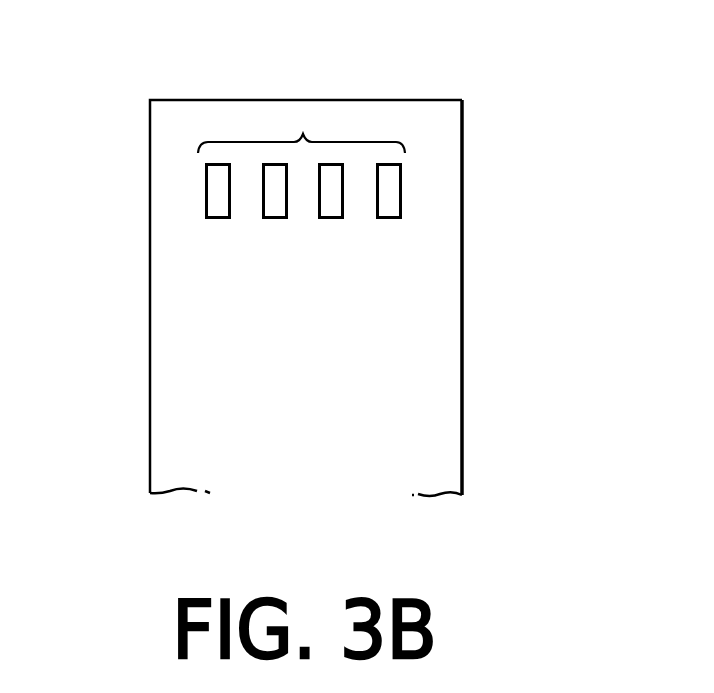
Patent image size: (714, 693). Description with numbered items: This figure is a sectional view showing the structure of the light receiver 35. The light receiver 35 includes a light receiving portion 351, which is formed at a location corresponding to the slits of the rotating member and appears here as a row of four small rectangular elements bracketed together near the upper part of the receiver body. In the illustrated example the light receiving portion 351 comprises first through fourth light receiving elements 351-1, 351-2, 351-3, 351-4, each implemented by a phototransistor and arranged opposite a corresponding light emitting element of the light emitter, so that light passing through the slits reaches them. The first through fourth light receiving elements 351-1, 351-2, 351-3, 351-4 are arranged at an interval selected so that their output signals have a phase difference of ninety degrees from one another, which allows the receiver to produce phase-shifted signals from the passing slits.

The light receiver 35 is at (463, 420).
The light receiving portion 351 is at (303, 138).
The first light receiving element 351-1 is at (385, 219).
The second light receiving element 351-2 is at (327, 219).
The third light receiving element 351-3 is at (274, 219).
The fourth light receiving element 351-4 is at (210, 219).